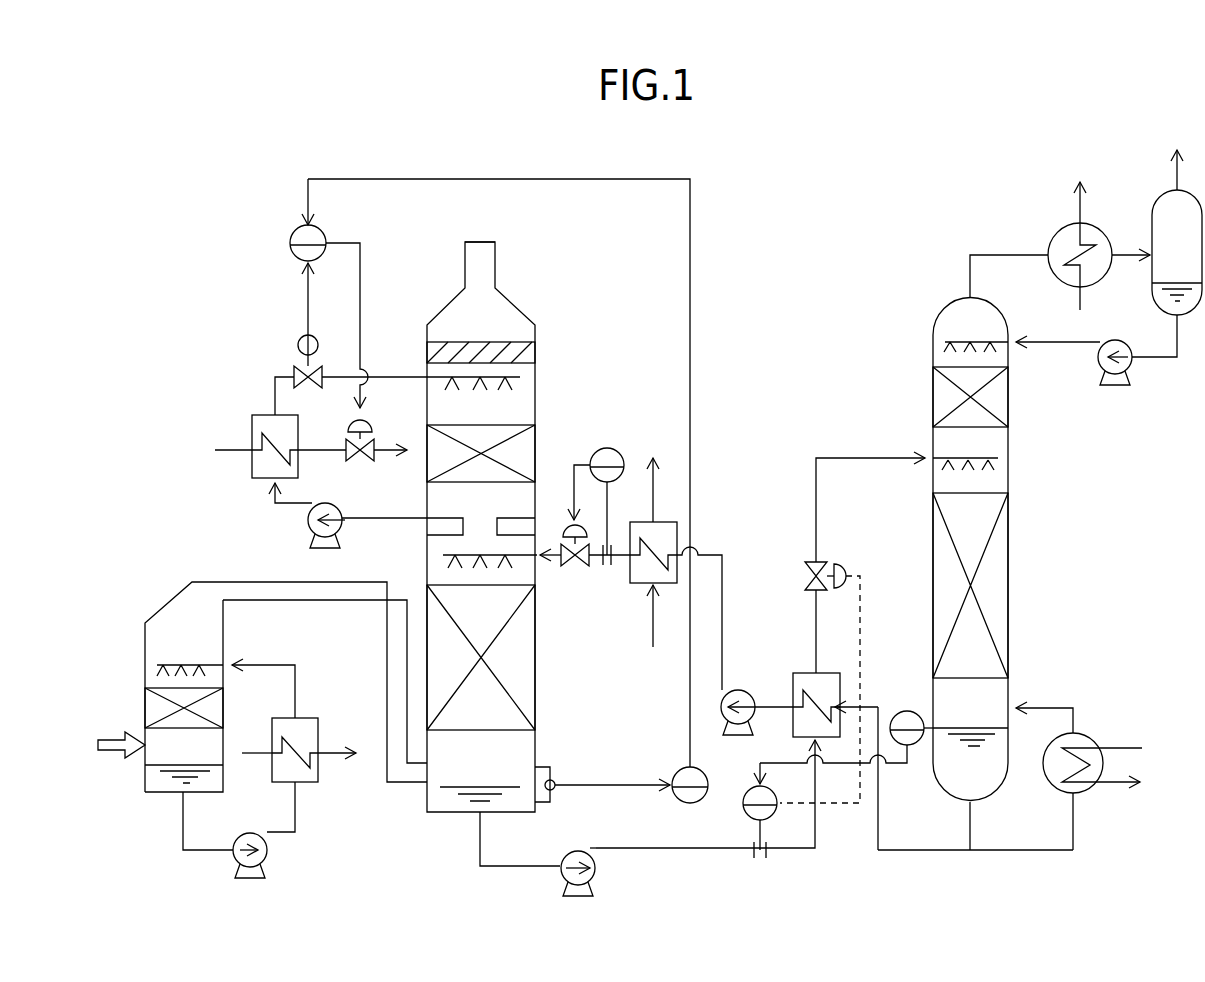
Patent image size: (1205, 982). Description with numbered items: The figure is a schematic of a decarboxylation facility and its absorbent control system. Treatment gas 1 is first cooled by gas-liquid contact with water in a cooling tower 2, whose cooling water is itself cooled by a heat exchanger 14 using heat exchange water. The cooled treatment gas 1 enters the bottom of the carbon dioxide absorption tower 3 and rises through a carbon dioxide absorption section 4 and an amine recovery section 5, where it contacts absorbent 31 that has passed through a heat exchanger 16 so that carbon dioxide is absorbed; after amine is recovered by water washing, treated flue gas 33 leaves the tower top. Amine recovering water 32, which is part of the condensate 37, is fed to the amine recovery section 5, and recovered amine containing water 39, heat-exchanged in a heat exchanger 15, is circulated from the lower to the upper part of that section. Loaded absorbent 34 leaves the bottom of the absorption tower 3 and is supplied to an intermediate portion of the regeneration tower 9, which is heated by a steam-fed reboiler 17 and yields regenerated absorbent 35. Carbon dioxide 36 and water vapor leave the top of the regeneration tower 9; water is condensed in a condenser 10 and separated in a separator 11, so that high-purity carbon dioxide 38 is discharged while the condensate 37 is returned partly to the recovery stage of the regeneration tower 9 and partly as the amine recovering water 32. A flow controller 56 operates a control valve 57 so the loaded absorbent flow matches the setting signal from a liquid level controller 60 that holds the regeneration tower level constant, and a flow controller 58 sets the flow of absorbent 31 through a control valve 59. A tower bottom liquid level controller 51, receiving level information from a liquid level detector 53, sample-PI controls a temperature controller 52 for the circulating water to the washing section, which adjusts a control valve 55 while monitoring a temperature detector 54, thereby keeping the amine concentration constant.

The treatment gas 1 is at (106, 752).
The cooling tower 2 is at (175, 607).
The carbon dioxide absorption tower 3 is at (523, 500).
The carbon dioxide absorption section 4 is at (437, 657).
The amine recovery section 5 is at (523, 450).
The regeneration tower 9 is at (1005, 562).
The condenser 10 is at (1057, 232).
The separator 11 is at (1157, 215).
The heat exchanger 14 is at (316, 775).
The heat exchanger 15 is at (252, 462).
The heat exchanger 16 is at (667, 535).
The reboiler 17 is at (1088, 733).
The absorbent 31 is at (722, 578).
The amine recovering water 32 is at (400, 377).
The treated flue gas 33 is at (482, 242).
The loaded absorbent 34 is at (508, 860).
The regenerated absorbent 35 is at (900, 850).
The carbon dioxide 36 is at (1000, 255).
The condensate 37 is at (1153, 360).
The high-purity carbon dioxide 38 is at (1175, 175).
The recovered amine containing water 39 is at (353, 519).
The tower bottom liquid level controller 51 is at (697, 795).
The temperature controller 52 is at (290, 247).
The liquid level detector 53 is at (548, 767).
The temperature detector 54 is at (298, 345).
The control valve 55 is at (372, 460).
The flow controller 56 is at (745, 822).
The control valve 57 is at (818, 565).
The flow controller 58 is at (622, 458).
The control valve 59 is at (570, 568).
The liquid level controller 60 is at (900, 710).